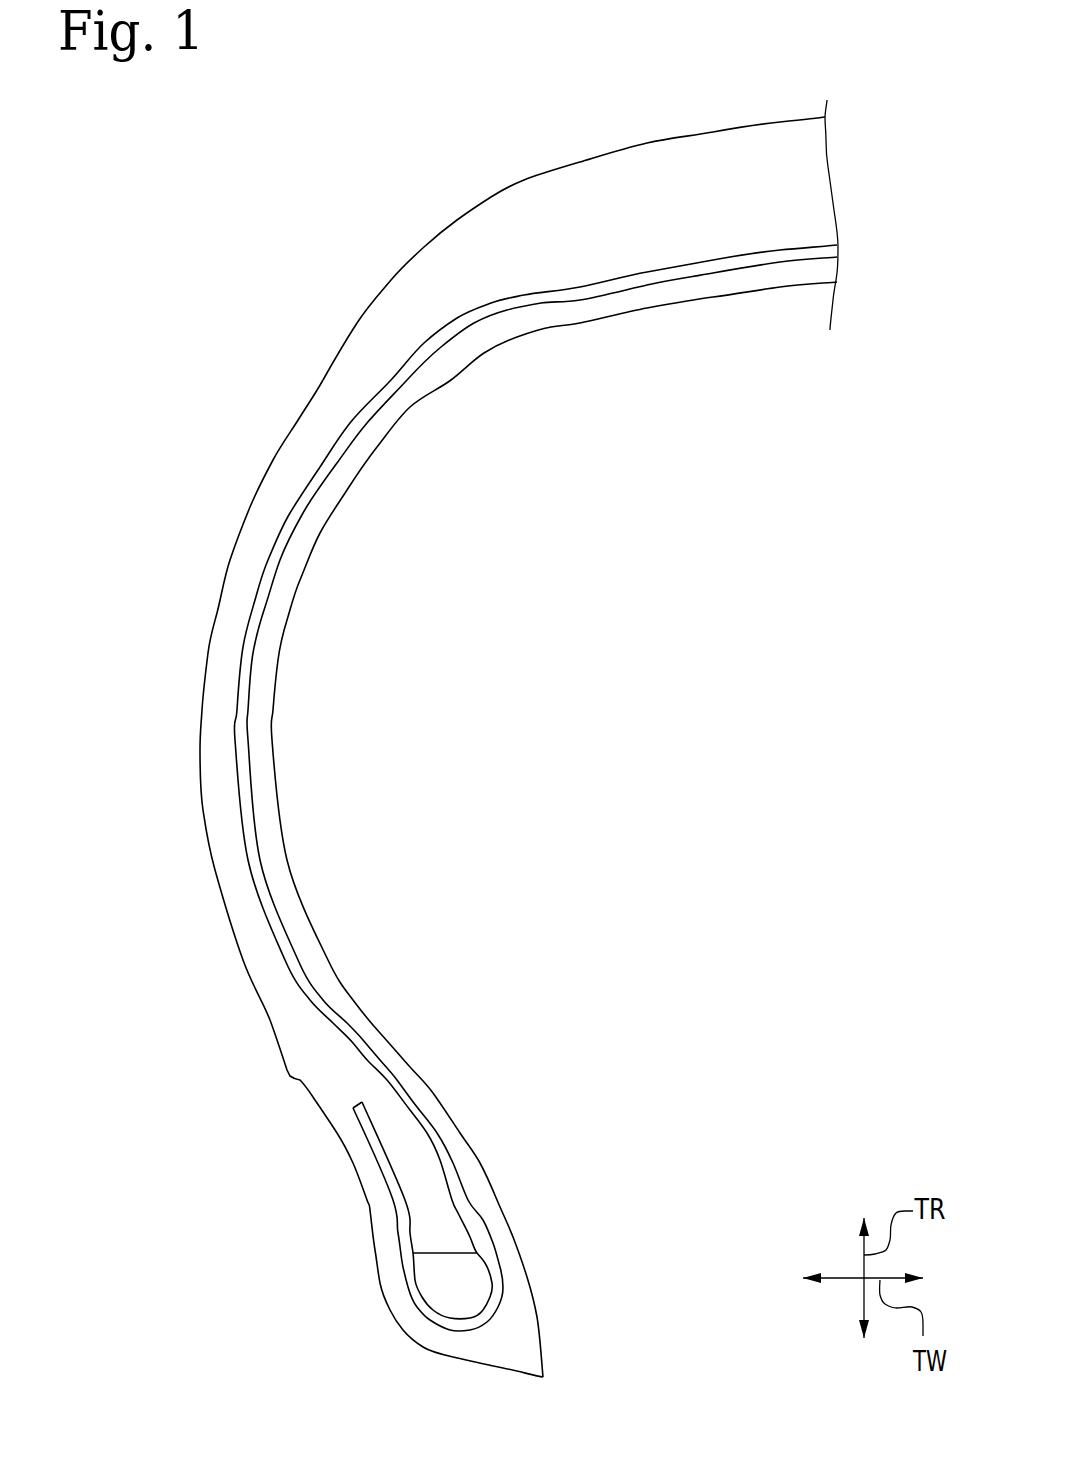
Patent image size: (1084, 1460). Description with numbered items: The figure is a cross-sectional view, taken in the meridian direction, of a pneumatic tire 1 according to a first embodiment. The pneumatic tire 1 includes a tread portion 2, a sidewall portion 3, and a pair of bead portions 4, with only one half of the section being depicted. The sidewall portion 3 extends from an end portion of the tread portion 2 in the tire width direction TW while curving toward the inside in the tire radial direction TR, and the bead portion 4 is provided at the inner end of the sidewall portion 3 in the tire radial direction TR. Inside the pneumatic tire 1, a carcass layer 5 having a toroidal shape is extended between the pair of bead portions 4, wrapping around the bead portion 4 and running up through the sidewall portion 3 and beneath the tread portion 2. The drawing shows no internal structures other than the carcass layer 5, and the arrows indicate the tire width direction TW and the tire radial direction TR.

The pneumatic tire 1 is at (250, 200).
The tread portion 2 is at (550, 168).
The sidewall portion 3 is at (215, 654).
The bead portion 4 is at (370, 1175).
The carcass layer 5 is at (350, 427).